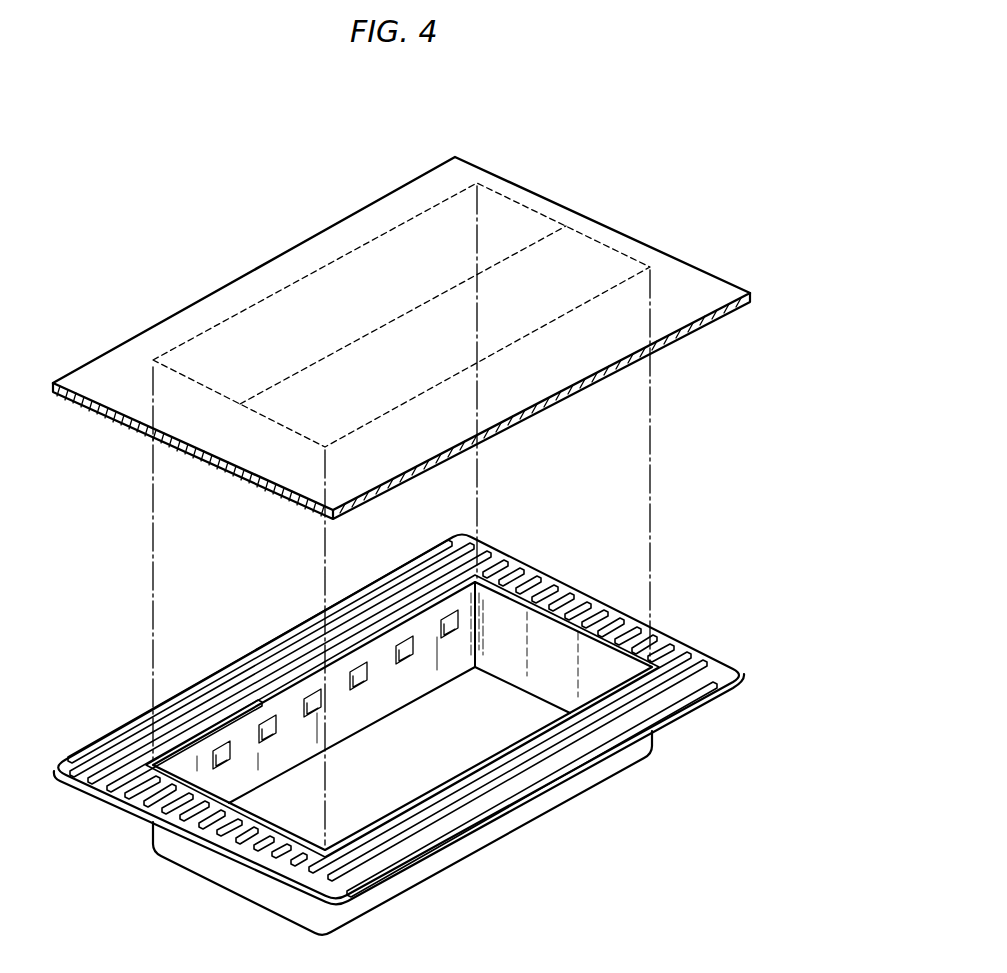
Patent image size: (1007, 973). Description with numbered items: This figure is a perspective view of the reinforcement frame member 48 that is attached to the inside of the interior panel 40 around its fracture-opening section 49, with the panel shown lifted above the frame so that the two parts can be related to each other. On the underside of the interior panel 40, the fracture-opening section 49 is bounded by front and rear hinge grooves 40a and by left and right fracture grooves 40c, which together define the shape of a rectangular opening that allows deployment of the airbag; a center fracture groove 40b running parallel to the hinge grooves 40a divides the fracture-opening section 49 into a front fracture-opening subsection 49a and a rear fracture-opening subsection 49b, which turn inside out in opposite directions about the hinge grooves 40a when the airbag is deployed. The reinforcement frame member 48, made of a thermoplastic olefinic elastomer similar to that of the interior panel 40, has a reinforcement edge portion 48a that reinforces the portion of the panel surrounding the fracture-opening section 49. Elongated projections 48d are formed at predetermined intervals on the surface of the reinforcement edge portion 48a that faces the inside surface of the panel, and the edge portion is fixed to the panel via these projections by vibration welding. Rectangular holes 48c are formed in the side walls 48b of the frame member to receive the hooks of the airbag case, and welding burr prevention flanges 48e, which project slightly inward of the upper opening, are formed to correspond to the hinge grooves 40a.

The interior panel 40 is at (710, 264).
The hinge grooves 40a is at (213, 323).
The center fracture groove 40b is at (330, 262).
The fracture grooves 40c is at (613, 228).
The fracture-opening section 49 is at (264, 285).
The front fracture-opening subsection 49a is at (450, 210).
The rear fracture-opening subsection 49b is at (563, 257).
The reinforcement frame member 48 is at (405, 715).
The reinforcement edge portion 48a is at (540, 558).
The side walls 48b is at (257, 680).
The rectangular holes 48c is at (358, 680).
The elongated projections 48d is at (700, 633).
The welding burr prevention flanges 48e is at (370, 823).